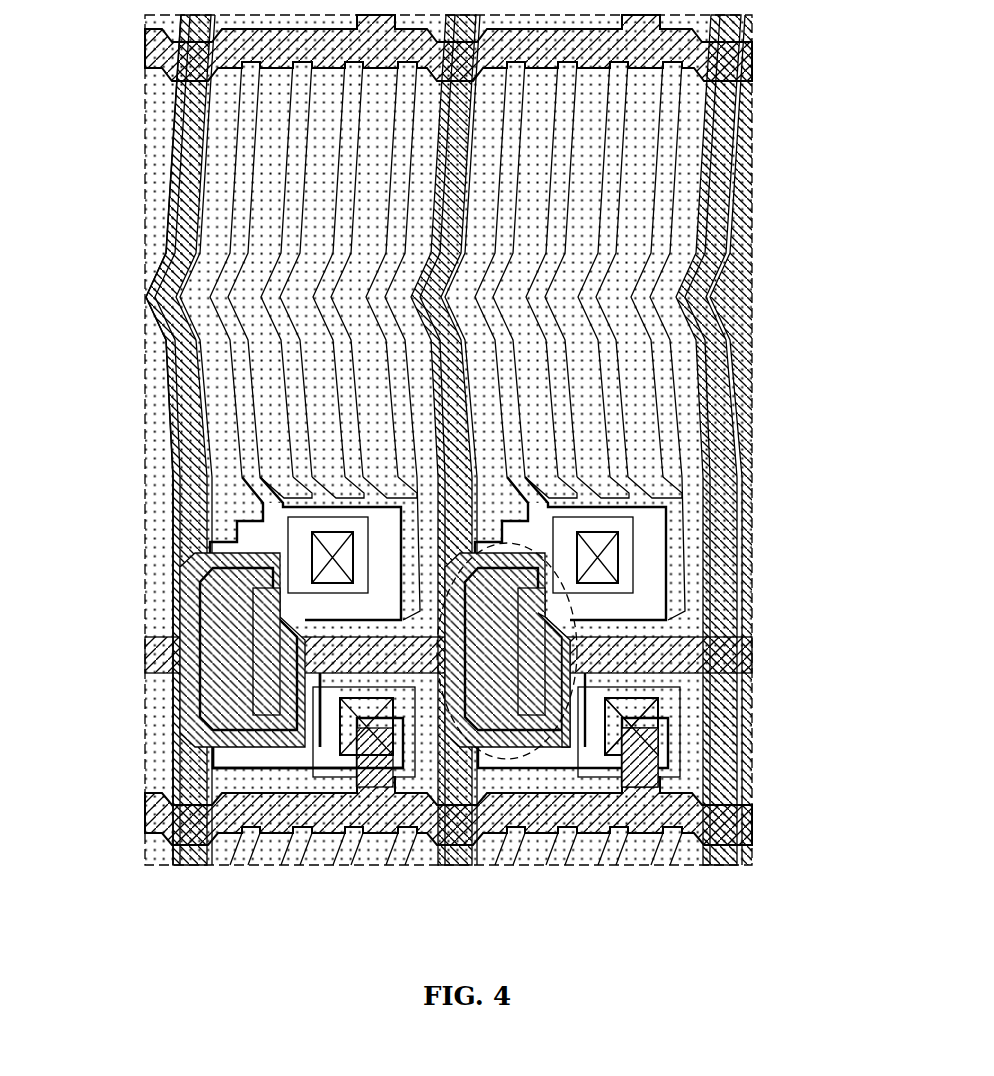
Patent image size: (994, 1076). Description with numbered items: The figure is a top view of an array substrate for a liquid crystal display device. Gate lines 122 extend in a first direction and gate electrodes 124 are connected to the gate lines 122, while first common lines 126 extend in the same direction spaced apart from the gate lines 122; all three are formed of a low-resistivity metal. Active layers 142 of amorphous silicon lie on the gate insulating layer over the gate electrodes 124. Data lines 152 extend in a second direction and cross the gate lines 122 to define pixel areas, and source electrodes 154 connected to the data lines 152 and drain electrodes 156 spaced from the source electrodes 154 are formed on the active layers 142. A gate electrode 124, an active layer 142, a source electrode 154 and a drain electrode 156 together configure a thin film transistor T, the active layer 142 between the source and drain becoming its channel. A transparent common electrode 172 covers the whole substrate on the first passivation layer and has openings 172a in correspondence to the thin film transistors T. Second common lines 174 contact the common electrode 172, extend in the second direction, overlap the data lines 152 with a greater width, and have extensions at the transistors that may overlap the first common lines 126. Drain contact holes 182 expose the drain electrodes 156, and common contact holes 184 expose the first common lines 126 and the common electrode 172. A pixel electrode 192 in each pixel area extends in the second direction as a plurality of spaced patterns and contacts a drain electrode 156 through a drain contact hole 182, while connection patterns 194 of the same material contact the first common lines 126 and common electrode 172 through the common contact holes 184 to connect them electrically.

The gate line 122 is at (148, 612).
The gate electrode 124 is at (555, 740).
The first common line 126 is at (148, 793).
The active layer 142 is at (480, 690).
The data line 152 is at (160, 376).
The source electrode 154 is at (490, 718).
The drain electrode 156 is at (507, 690).
The common electrode 172 is at (262, 770).
The opening 172a is at (297, 752).
The second common line 174 is at (176, 410).
The drain contact hole 182 is at (623, 532).
The common contact hole 184 is at (653, 707).
The pixel electrode 192 is at (675, 385).
The connection pattern 194 is at (688, 745).
The thin film transistor T is at (440, 745).